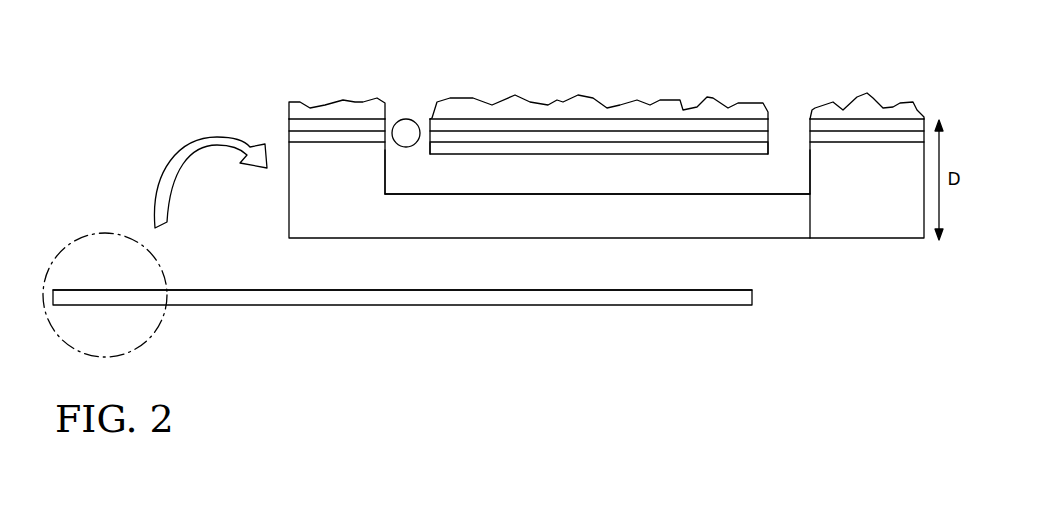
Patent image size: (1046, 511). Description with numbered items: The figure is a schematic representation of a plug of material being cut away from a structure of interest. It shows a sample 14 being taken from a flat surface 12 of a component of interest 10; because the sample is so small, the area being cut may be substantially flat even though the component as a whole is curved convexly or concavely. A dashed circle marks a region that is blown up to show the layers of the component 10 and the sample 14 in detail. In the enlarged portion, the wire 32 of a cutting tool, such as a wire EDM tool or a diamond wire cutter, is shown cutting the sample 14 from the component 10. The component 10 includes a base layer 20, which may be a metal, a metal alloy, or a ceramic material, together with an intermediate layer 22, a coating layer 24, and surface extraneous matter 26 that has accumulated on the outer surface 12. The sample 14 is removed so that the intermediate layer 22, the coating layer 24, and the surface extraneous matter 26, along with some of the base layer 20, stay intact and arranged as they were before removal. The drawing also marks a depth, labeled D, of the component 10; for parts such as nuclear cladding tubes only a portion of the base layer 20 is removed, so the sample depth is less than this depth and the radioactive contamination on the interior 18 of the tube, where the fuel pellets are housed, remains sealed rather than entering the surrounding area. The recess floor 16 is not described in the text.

The component of interest 10 is at (252, 128).
The flat surface 12 is at (683, 112).
The sample 14 is at (488, 98).
The recess floor 16 is at (440, 195).
The interior 18 is at (855, 238).
The base layer 20 is at (702, 148).
The intermediate layer 22 is at (298, 136).
The coating layer 24 is at (373, 126).
The surface extraneous matter 26 is at (322, 112).
The wire 32 is at (410, 132).